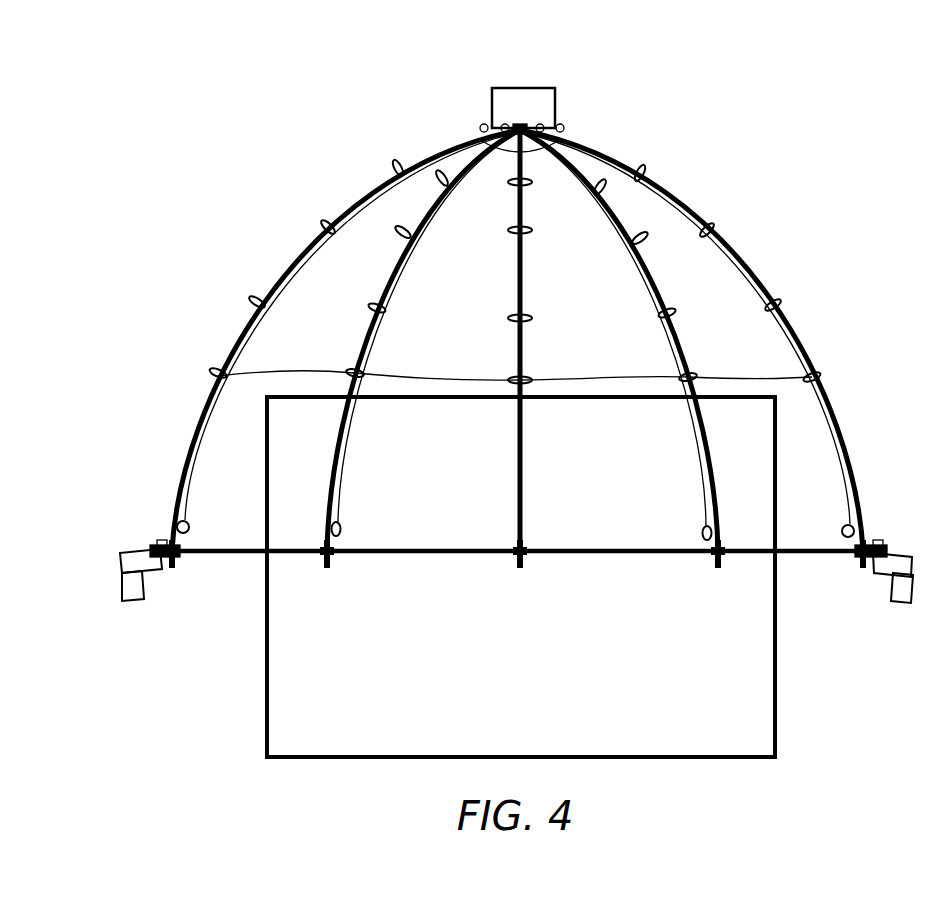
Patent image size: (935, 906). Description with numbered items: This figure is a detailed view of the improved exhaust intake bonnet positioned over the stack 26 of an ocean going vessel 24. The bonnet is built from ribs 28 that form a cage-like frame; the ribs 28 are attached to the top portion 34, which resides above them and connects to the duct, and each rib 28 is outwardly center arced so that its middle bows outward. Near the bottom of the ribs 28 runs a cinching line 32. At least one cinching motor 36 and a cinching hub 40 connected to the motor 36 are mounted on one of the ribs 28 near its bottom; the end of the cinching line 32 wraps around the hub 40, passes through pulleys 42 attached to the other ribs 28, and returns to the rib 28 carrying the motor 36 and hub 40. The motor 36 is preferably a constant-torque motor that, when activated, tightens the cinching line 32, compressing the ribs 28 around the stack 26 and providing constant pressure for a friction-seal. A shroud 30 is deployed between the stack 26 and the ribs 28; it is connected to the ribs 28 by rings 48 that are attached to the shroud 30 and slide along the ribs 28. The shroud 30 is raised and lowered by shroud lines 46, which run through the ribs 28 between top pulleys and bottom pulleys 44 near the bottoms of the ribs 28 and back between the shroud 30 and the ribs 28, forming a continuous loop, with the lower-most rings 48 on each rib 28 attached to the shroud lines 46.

The Ocean Going Vessel (OGV) 24 is at (512, 560).
The stack 26 is at (531, 703).
The ribs 28 is at (386, 182).
The shroud 30 is at (436, 333).
The cinching line 32 is at (432, 558).
The top portion 34 is at (515, 102).
The cinching motor 36 is at (128, 602).
The cinching hub 40 is at (160, 545).
The pulleys 42 is at (332, 560).
The bottom pulleys 44 is at (190, 525).
The shroud lines 46 is at (205, 485).
The rings 48 is at (648, 172).